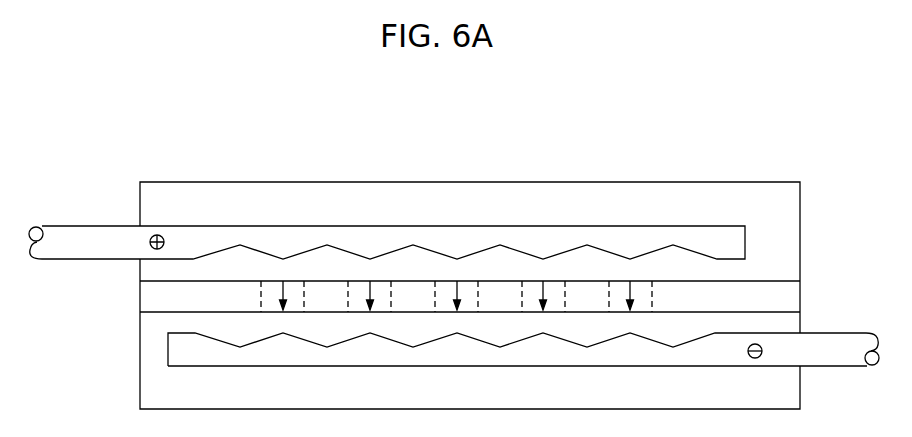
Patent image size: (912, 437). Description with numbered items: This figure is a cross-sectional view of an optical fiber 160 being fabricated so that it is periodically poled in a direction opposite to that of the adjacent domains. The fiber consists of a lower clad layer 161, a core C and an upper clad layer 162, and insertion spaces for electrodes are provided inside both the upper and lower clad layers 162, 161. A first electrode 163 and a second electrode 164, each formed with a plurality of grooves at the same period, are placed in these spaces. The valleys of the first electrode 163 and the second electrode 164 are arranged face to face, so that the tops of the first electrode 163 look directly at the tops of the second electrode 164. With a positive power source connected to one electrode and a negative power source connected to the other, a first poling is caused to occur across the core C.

The optical fiber 160 is at (781, 159).
The lower clad layer 161 is at (148, 380).
The upper clad layer 162 is at (798, 216).
The first electrode 163 is at (857, 340).
The second electrode 164 is at (78, 237).
The core C is at (147, 298).